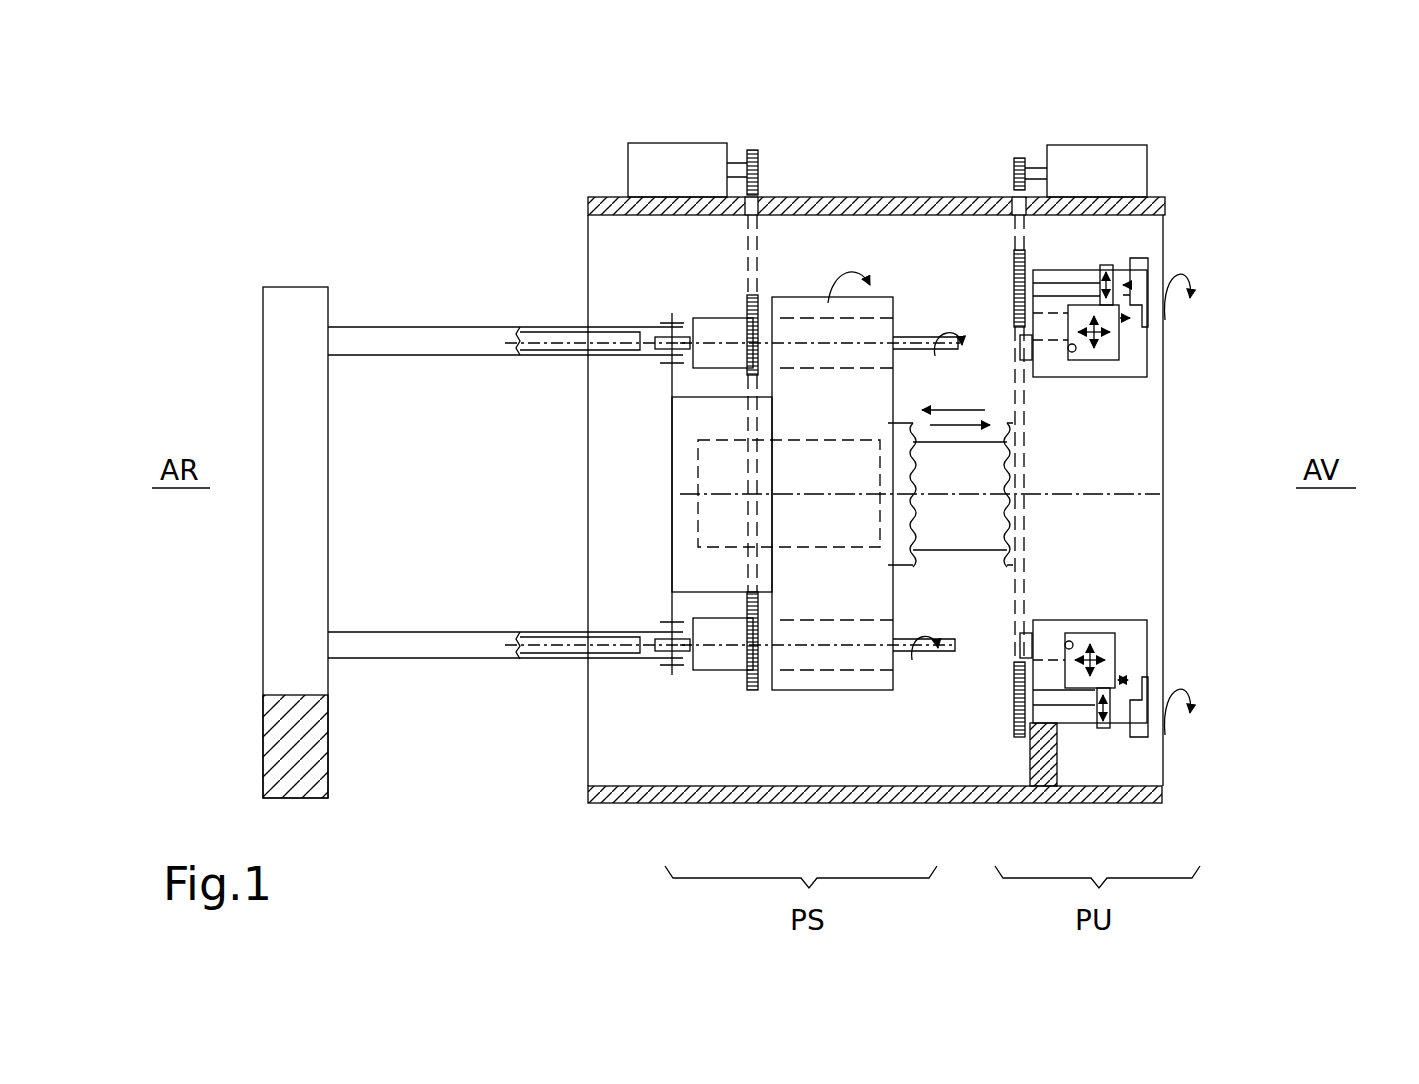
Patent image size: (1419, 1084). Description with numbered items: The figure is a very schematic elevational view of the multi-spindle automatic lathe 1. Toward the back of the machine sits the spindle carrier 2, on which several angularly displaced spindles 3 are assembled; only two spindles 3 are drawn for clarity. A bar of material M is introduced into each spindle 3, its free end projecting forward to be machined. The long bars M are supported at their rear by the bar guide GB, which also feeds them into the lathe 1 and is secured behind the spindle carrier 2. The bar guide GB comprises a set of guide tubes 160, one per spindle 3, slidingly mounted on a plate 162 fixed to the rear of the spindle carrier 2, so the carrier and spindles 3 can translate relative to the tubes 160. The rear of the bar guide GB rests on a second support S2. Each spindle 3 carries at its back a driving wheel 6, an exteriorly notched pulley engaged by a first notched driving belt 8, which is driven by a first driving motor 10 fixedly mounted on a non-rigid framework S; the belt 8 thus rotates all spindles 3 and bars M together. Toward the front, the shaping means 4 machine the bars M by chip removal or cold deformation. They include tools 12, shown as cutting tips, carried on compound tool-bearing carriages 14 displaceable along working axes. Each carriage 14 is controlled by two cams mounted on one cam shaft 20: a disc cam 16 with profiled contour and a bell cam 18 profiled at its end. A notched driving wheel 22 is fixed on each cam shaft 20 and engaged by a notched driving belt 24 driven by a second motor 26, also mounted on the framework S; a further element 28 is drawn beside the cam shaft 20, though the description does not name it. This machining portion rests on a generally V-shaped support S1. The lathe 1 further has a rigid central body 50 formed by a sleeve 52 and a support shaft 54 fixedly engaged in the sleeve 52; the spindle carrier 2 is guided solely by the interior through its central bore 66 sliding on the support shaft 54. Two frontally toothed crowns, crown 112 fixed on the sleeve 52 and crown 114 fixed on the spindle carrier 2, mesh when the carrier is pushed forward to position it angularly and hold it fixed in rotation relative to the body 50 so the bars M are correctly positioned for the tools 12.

The automatic lathe 1 is at (1285, 260).
The spindle carrier 2 is at (812, 675).
The spindle 3 is at (722, 658).
The shaping means 4 is at (1152, 350).
The driving wheel 6 is at (748, 318).
The first notched driving belt 8 is at (748, 252).
The first driving motor 10 is at (675, 185).
The tool 12 is at (1082, 365).
The tool-bearing carriage 14 is at (1108, 352).
The control cam 16 is at (1106, 265).
The bell cam 18 is at (1140, 258).
The cam shaft 20 is at (1080, 290).
The driving wheel 22 is at (1014, 270).
The notched driving belt 24 is at (1000, 205).
The second motor 26 is at (1072, 165).
The bearing 28 is at (1030, 322).
The rigid central body 50 is at (1004, 590).
The sleeve 52 is at (1063, 600).
The support shaft 54 is at (972, 515).
The bore 66 is at (810, 445).
The crown 112 is at (1030, 470).
The crown 114 is at (895, 440).
The guide tube 160 is at (432, 340).
The plate 162 is at (672, 400).
The bar guide GB is at (287, 390).
The non-rigid framework S is at (893, 200).
The support S1 is at (1032, 765).
The second support S2 is at (300, 745).
The bar of material M is at (610, 350).